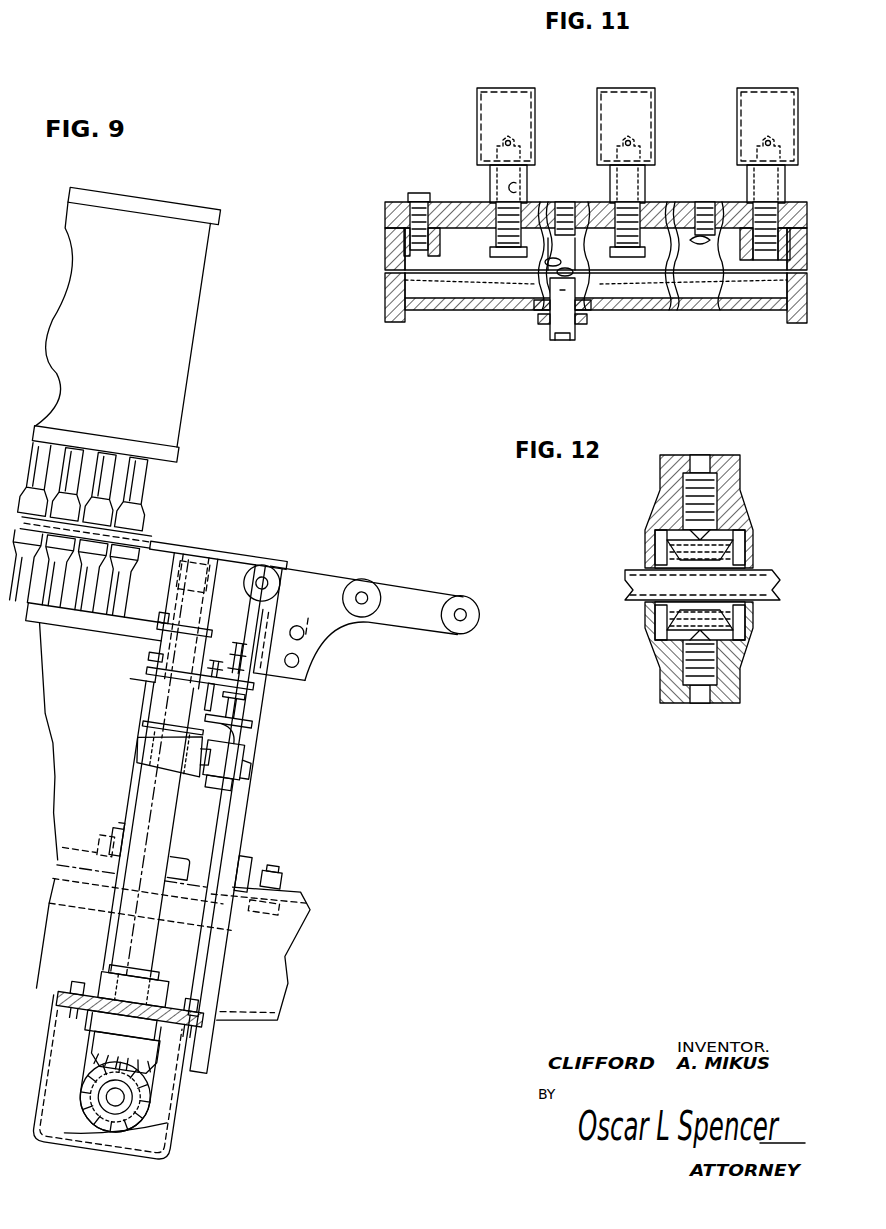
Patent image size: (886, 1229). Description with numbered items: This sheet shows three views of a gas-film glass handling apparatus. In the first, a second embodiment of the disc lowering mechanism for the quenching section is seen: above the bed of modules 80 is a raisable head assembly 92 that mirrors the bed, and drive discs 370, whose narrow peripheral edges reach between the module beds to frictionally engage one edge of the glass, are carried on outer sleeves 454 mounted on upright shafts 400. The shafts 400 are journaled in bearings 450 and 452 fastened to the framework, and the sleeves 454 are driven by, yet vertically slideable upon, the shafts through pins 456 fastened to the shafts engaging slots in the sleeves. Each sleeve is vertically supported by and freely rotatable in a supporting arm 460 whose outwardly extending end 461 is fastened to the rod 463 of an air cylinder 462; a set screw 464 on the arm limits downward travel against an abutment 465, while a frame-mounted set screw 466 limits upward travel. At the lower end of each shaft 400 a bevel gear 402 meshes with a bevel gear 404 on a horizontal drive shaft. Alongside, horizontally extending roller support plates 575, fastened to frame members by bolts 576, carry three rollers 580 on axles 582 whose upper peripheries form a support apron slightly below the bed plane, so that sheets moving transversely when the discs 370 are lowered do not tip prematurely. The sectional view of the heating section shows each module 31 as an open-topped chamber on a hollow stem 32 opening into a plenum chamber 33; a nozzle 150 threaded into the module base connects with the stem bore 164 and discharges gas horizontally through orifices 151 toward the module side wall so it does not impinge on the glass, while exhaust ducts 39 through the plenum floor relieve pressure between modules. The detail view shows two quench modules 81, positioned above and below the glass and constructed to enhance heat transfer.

In FIG. 11, the module 31 is at (477, 100).
In FIG. 11, the nozzle 150 is at (608, 143).
In FIG. 11, the orifices 151 is at (620, 148).
In FIG. 11, the stem 32 is at (490, 177).
In FIG. 11, the bore 164 is at (518, 188).
In FIG. 11, the plenum chamber 33 is at (462, 262).
In FIG. 11, the exhaust ducts 39 is at (553, 253).
In FIG. 12, the quench module 81 is at (648, 612).
In FIG. 9, the head assembly 92 is at (125, 325).
In FIG. 9, the bed of modules 80 is at (79, 530).
In FIG. 9, the drive discs 370 is at (219, 555).
In FIG. 9, the outer sleeves 454 is at (186, 621).
In FIG. 9, the pins 456 is at (185, 624).
In FIG. 9, the set screw 466 is at (226, 660).
In FIG. 9, the supporting arm 460 is at (201, 671).
In FIG. 9, the set screw 464 is at (209, 697).
In FIG. 9, the bearing 450 is at (173, 749).
In FIG. 9, the outwardly extending end 461 is at (234, 696).
In FIG. 9, the rod 463 is at (231, 707).
In FIG. 9, the abutment 465 is at (227, 730).
In FIG. 9, the air cylinder 462 is at (227, 766).
In FIG. 9, the axles 582 is at (361, 599).
In FIG. 9, the roller support plates 575 is at (358, 634).
In FIG. 9, the bolts 576 is at (283, 644).
In FIG. 9, the rollers 580 is at (362, 598).
In FIG. 9, the upright shafts 400 is at (148, 829).
In FIG. 9, the bearing 452 is at (131, 998).
In FIG. 9, the bevel gear 402 is at (117, 1073).
In FIG. 9, the bevel gear 404 is at (111, 1078).